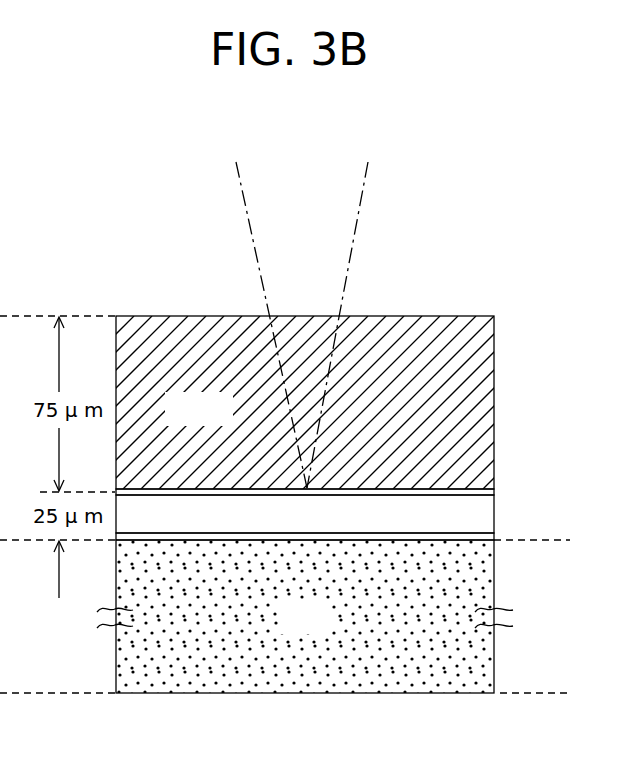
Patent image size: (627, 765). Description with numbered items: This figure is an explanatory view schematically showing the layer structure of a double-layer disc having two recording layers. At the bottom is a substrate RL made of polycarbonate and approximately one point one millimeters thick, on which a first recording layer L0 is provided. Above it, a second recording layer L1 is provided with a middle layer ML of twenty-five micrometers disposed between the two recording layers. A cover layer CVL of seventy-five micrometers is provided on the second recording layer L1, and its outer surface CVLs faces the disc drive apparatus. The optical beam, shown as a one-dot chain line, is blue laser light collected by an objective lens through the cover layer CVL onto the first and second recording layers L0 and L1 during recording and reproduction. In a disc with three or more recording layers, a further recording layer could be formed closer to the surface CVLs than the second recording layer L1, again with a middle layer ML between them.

The cover layer CVL is at (313, 402).
The middle layer ML is at (305, 514).
The substrate RL is at (305, 616).
The surface of the cover layer CVLs is at (438, 314).
The second recording layer L1 is at (494, 491).
The first recording layer L0 is at (494, 543).